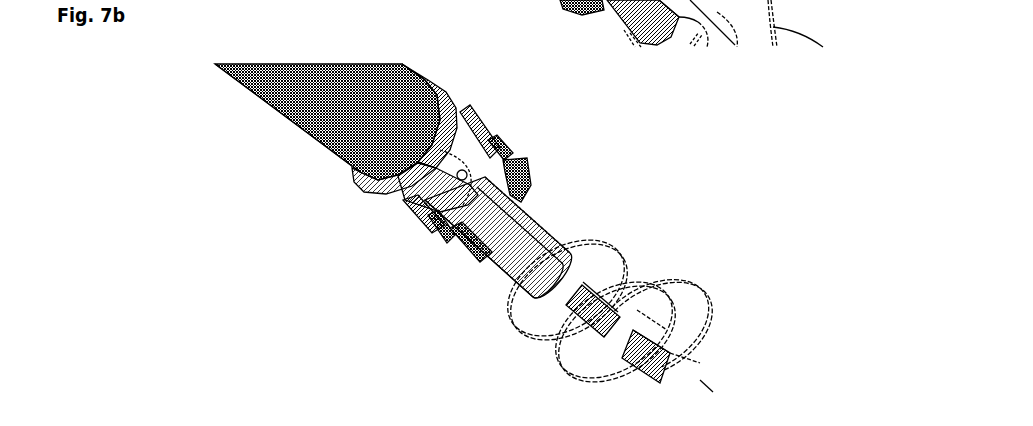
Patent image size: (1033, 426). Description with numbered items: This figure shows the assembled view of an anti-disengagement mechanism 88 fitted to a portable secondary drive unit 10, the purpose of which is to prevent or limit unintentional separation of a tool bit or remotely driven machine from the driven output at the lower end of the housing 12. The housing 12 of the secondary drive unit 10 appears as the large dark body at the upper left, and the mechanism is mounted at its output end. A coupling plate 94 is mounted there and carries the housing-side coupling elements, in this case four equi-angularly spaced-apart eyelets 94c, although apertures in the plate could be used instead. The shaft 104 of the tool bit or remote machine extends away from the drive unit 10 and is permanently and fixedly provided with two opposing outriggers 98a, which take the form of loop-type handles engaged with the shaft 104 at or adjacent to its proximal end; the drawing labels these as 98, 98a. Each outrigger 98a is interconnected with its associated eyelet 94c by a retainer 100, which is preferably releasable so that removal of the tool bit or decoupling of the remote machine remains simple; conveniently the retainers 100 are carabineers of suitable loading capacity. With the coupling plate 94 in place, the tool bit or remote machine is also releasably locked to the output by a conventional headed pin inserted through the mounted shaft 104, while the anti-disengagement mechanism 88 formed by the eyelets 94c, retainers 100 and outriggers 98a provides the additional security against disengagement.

The portable secondary drive unit 10 is at (262, 122).
The housing 12 is at (290, 120).
The anti-disengagement mechanism 88 is at (355, 188).
The coupling plate 94 is at (466, 105).
The eyelets 94c is at (383, 204).
The clamp 98 is at (596, 181).
The outriggers 98a is at (528, 162).
The retainer 100 is at (493, 136).
The shaft 104 is at (546, 232).